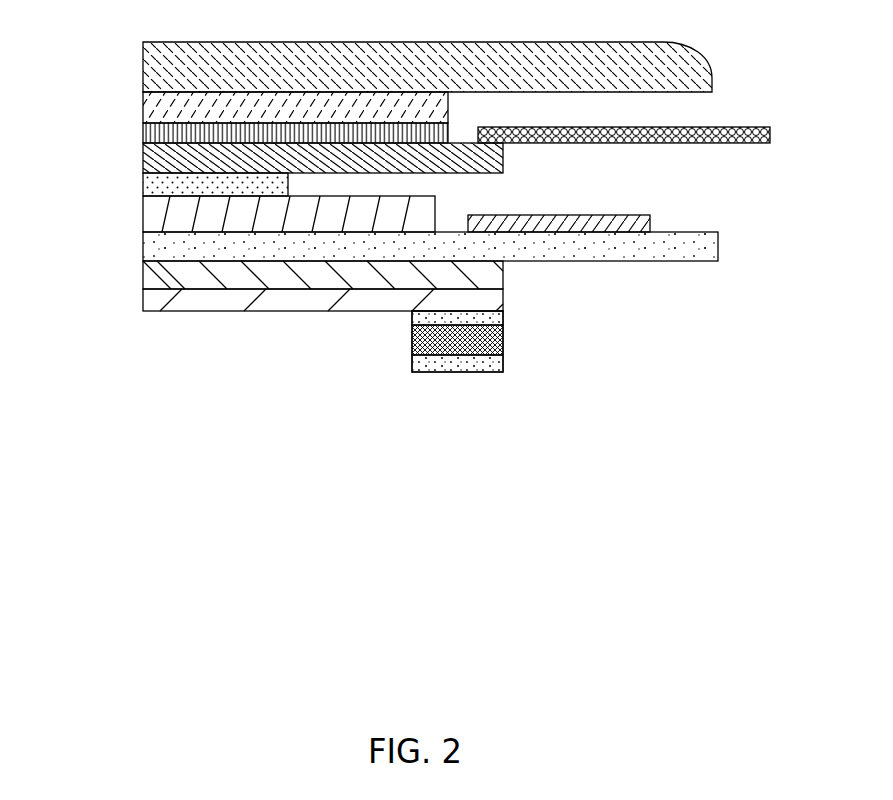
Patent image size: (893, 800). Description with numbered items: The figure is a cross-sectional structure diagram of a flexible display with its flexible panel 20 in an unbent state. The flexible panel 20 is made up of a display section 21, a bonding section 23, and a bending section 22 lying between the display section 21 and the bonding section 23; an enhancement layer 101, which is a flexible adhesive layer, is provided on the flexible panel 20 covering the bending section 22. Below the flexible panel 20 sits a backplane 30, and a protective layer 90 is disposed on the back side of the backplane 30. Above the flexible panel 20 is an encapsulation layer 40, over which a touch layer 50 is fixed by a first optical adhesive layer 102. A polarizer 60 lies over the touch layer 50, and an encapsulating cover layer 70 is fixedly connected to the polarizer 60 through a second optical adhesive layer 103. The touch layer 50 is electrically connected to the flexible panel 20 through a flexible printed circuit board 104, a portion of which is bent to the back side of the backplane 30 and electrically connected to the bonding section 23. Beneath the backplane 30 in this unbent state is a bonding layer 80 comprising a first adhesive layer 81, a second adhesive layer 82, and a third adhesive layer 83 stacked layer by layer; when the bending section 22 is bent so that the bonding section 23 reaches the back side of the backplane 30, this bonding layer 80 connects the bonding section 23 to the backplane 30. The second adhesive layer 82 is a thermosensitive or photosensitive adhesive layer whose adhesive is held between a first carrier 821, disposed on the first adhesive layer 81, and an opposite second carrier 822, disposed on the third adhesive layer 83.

The encapsulating cover layer 70 is at (143, 68).
The polarizer 60 is at (143, 98).
The second optical adhesive layer 103 is at (143, 130).
The flexible printed circuit board 104 is at (762, 127).
The touch layer 50 is at (143, 155).
The first optical adhesive layer 102 is at (143, 185).
The encapsulation layer 40 is at (143, 213).
The enhancement layer 101 is at (566, 230).
The flexible panel 20 is at (143, 246).
The display section 21 is at (248, 255).
The bending section 22 is at (540, 248).
The bonding section 23 is at (676, 246).
The backplane 30 is at (143, 265).
The protective layer 90 is at (143, 300).
The bonding layer 80 is at (486, 383).
The third adhesive layer 83 is at (412, 316).
The second adhesive layer 82 is at (503, 340).
The first adhesive layer 81 is at (412, 365).
The second carrier 822 is at (428, 372).
The first carrier 821 is at (470, 372).